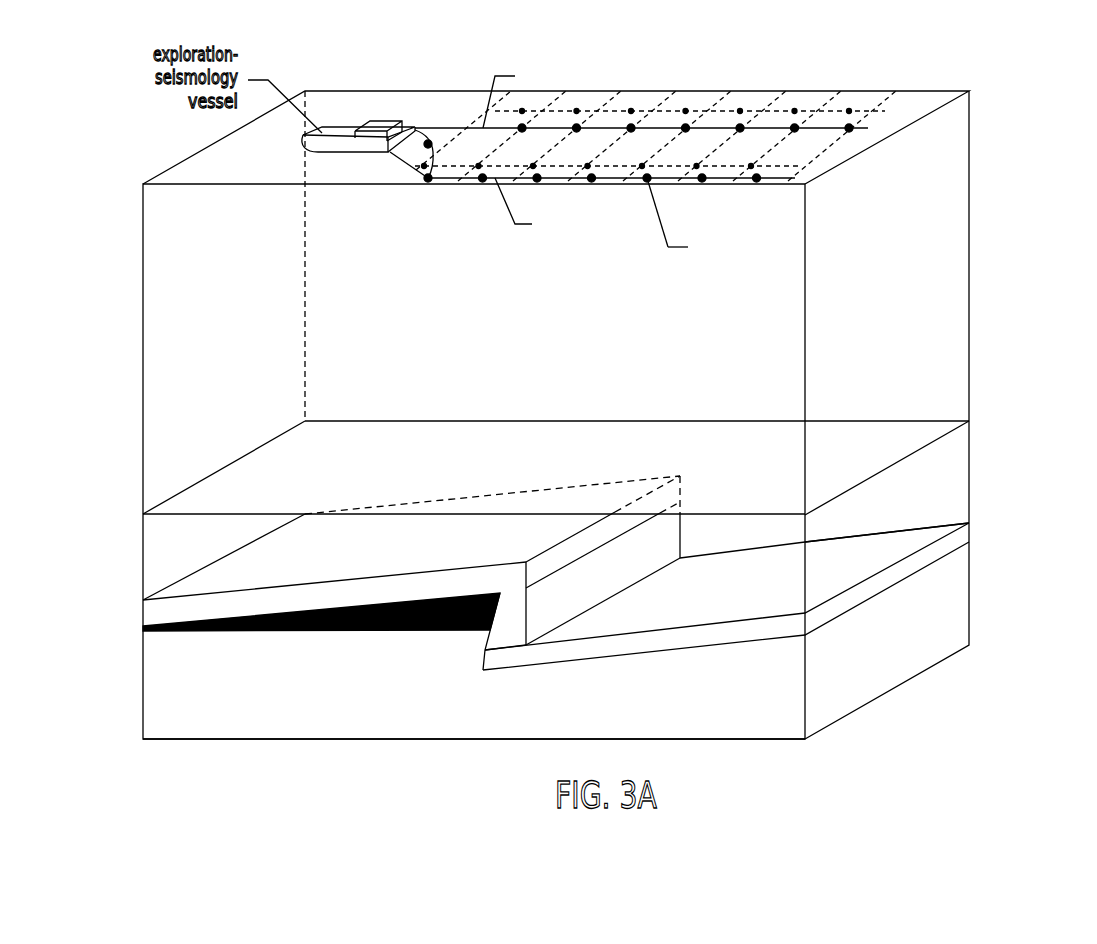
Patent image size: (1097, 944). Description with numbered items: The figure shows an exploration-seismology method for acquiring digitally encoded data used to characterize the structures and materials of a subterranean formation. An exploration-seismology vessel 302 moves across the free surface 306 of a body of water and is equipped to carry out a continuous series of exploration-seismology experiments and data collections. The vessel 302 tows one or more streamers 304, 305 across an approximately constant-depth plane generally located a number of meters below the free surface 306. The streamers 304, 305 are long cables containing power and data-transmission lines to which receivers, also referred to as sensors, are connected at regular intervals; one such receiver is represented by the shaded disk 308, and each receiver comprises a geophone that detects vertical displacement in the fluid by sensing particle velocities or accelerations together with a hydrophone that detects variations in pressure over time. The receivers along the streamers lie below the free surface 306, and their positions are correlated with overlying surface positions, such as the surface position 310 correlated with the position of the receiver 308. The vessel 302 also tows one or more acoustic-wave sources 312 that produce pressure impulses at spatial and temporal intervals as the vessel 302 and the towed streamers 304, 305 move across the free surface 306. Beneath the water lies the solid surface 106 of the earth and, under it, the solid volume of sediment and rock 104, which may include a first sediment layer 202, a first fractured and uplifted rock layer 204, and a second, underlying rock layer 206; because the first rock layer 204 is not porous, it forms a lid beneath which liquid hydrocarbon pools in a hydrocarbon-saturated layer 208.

The solid volume of sediment and rock 104 is at (955, 514).
The solid surface of the earth 106 is at (903, 442).
The first sediment layer 202 is at (178, 562).
The first fractured and uplifted rock layer 204 is at (192, 612).
The second rock layer 206 is at (276, 712).
The hydrocarbon-saturated layer 208 is at (357, 617).
The exploration-seismology vessel 302 is at (337, 132).
The streamer 304 is at (397, 163).
The streamer 305 is at (455, 128).
The free surface 306 is at (918, 107).
The receiver 308 is at (647, 178).
The surface position 310 is at (655, 145).
The acoustic-wave source 312 is at (428, 144).